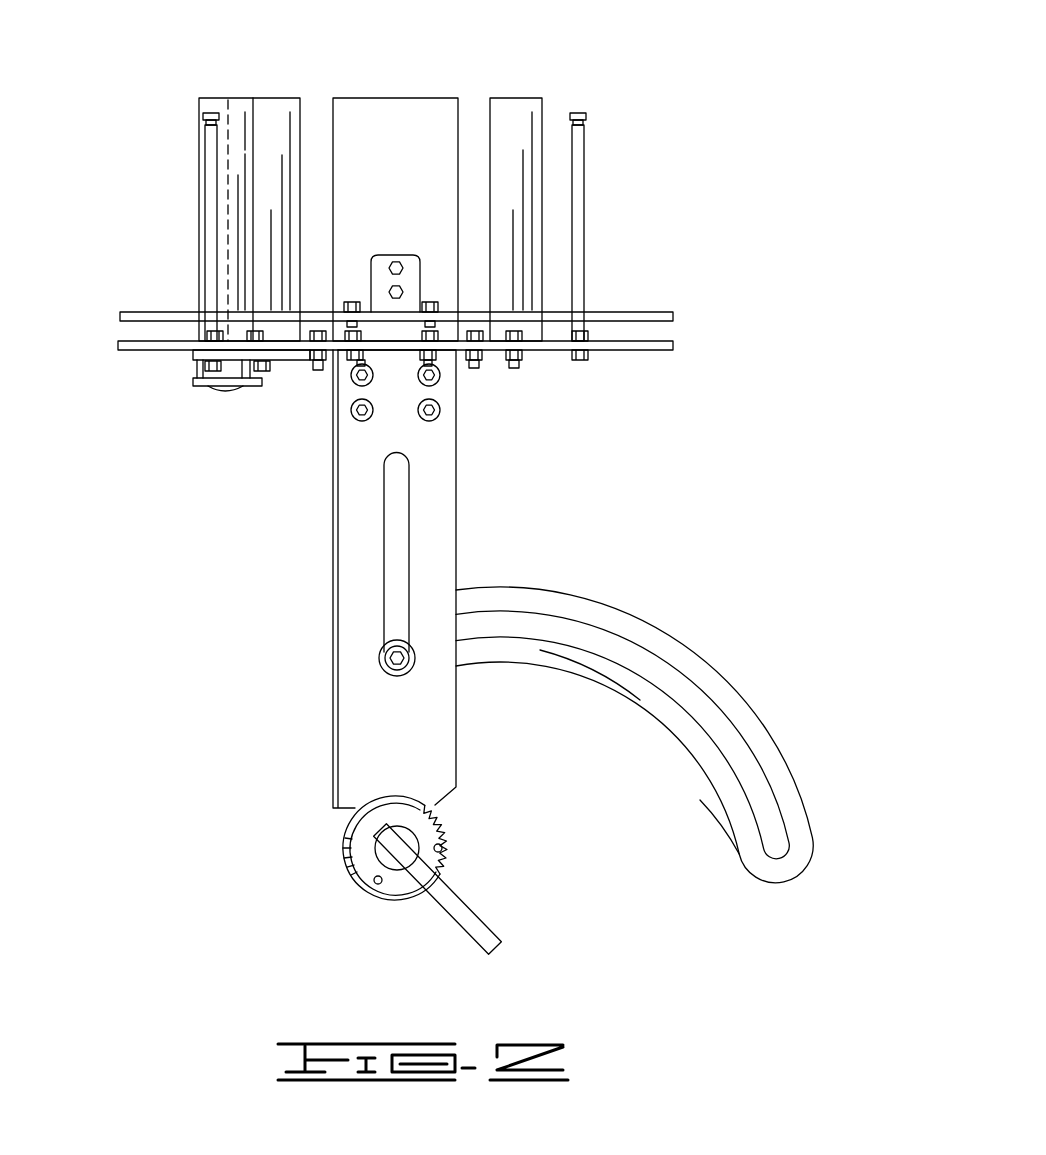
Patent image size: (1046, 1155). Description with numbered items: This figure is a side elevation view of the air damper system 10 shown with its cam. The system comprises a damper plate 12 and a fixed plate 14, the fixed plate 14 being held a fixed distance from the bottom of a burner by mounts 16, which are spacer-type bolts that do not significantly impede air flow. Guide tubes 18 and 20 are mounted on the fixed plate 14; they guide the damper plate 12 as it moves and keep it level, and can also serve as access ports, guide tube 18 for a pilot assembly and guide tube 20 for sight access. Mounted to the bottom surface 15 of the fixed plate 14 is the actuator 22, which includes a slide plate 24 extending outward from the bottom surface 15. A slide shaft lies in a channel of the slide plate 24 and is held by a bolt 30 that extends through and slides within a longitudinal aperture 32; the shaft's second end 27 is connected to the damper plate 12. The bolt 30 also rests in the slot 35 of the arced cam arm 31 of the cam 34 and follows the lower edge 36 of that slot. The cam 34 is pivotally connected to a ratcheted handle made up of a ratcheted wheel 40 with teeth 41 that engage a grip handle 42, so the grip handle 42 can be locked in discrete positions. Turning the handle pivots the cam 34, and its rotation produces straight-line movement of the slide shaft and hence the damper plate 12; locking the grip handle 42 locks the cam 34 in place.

The air damper system 10 is at (690, 66).
The damper plate 12 is at (640, 311).
The fixed plate 14 is at (148, 351).
The bottom surface 15 is at (640, 351).
The mounts 16 is at (205, 178).
The guide tube 18 is at (430, 97).
The guide tube 20 is at (207, 97).
The actuator 22 is at (335, 482).
The slide plate 24 is at (440, 468).
The second end 27 is at (395, 256).
The bolt 30 is at (380, 654).
The arced cam arm 31 is at (708, 660).
The longitudinal aperture 32 is at (397, 578).
The cam 34 is at (585, 680).
The slot 35 is at (560, 632).
The lower edge 36 is at (730, 757).
The ratcheted wheel 40 is at (372, 864).
The teeth 41 is at (450, 830).
The grip handle 42 is at (475, 905).